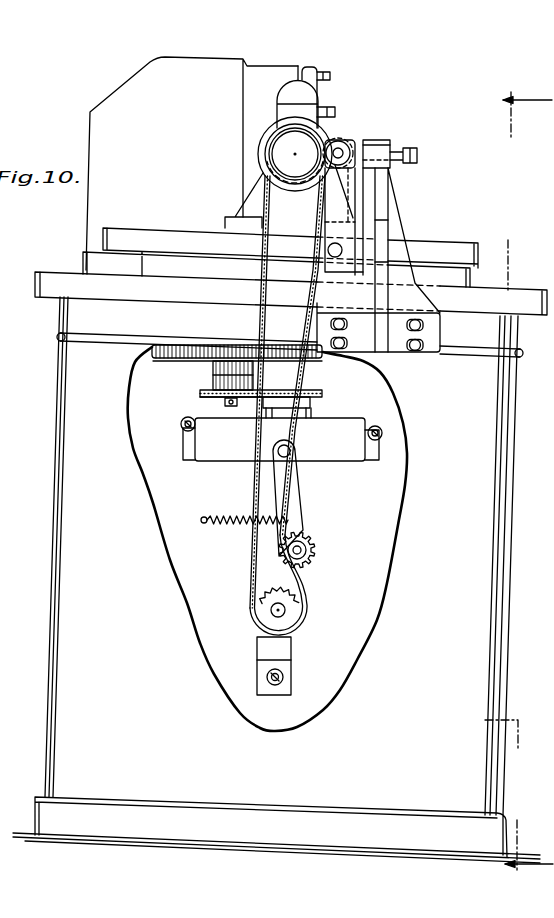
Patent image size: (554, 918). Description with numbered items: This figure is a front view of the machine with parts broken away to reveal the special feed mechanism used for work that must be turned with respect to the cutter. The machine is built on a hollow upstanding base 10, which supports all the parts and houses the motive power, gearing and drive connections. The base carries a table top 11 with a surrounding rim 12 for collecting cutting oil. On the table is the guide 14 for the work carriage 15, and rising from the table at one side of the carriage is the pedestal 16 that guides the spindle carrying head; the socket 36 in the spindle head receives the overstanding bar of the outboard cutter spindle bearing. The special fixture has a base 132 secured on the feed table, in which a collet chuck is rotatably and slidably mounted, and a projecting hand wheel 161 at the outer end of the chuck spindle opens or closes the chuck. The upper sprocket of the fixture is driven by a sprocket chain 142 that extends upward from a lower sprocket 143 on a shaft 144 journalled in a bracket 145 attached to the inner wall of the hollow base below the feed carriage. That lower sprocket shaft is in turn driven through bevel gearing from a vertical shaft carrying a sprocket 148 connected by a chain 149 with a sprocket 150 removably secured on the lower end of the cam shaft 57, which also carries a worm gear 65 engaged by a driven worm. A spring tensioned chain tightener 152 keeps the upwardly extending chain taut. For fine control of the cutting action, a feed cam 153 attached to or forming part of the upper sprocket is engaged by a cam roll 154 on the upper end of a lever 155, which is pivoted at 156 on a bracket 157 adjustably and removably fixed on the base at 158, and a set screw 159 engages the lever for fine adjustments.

The hollow upstanding base 10 is at (58, 472).
The table top 11 is at (519, 475).
The surrounding rim 12 is at (63, 271).
The guide 14 is at (276, 269).
The work carriage 15 is at (182, 230).
The pedestal 16 is at (96, 203).
The socket 36 is at (319, 97).
The cam shaft 57 is at (228, 403).
The worm gear 65 is at (167, 360).
The base 132 is at (252, 190).
The sprocket chain 142 is at (302, 376).
The lower sprocket 143 is at (289, 623).
The shaft 144 is at (272, 610).
The bracket 145 is at (317, 461).
The sprocket 148 is at (312, 400).
The chain 149 is at (252, 398).
The sprocket 150 is at (205, 390).
The spring tensioned chain tightener 152 is at (317, 539).
The feed cam 153 is at (296, 184).
The cam roll 154 is at (349, 140).
The lever 155 is at (389, 168).
The pivot 156 is at (336, 258).
The bracket 157 is at (397, 218).
The fixing point 158 is at (412, 333).
The set screw 159 is at (378, 149).
The hand wheel 161 is at (268, 150).